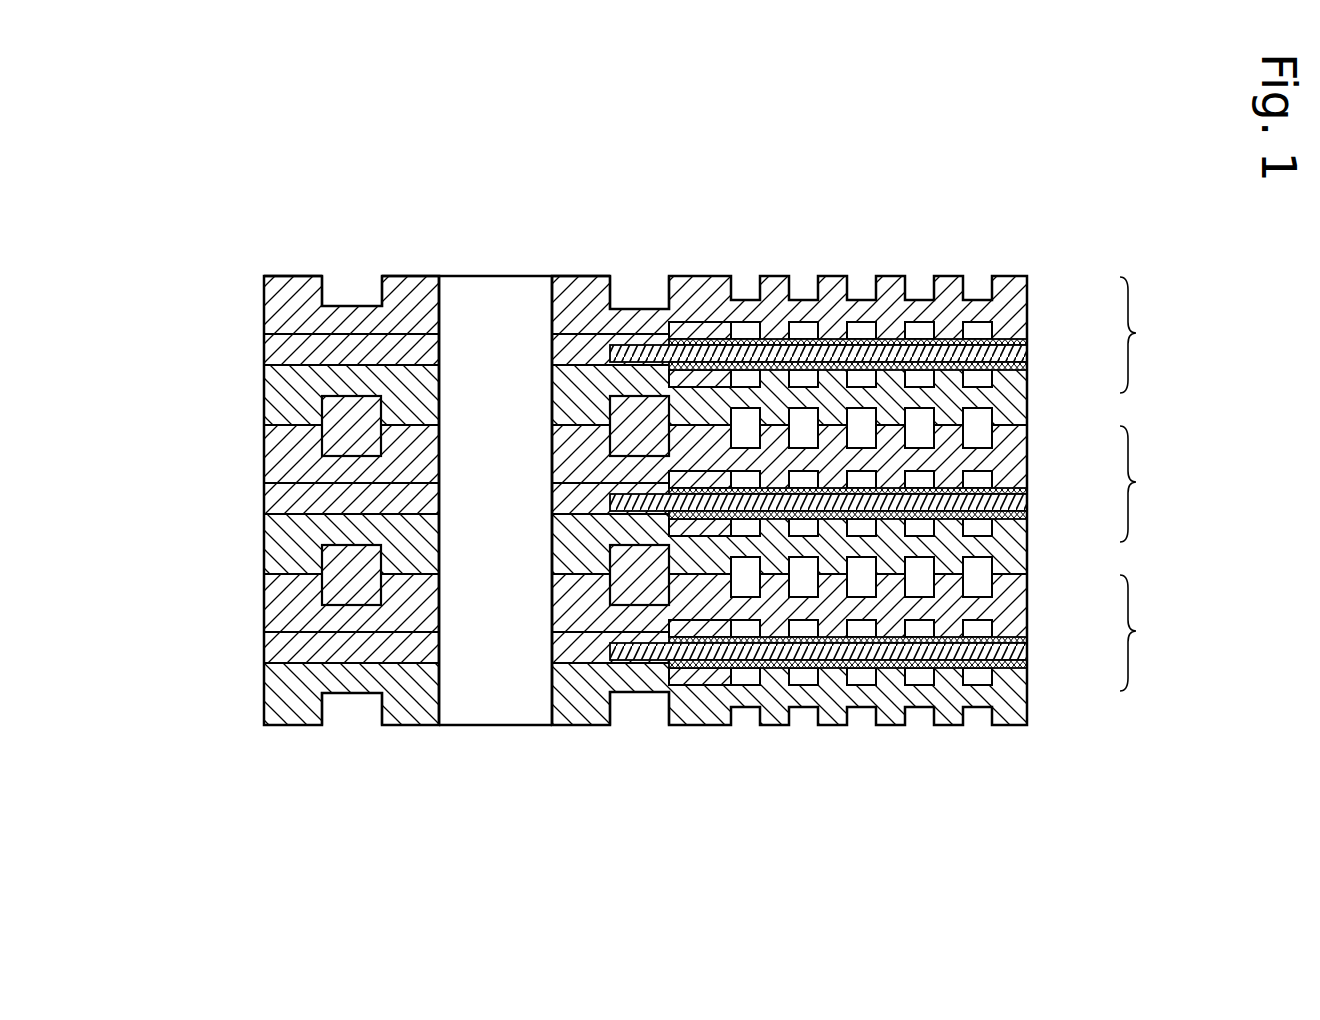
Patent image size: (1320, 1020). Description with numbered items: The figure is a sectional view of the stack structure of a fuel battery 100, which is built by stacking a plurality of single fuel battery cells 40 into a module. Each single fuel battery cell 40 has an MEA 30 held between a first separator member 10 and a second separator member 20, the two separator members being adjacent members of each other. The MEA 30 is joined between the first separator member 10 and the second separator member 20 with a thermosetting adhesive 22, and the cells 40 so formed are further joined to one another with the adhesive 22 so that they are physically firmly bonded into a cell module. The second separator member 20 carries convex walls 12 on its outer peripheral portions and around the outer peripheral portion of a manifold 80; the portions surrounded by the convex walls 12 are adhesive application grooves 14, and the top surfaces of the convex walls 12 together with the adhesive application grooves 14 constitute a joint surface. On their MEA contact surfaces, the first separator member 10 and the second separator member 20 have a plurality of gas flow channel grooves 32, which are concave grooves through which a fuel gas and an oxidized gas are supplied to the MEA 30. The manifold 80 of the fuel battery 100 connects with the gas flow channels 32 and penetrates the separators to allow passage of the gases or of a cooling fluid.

The first separator member 10 is at (278, 388).
The convex wall 12 is at (290, 276).
The adhesive application groove 14 is at (293, 448).
The second separator member 20 is at (280, 311).
The thermosetting adhesive 22 is at (437, 350).
The MEA 30 is at (1038, 370).
The gas flow channel groove 32 is at (858, 632).
The single fuel battery cell 40 is at (1146, 484).
The manifold 80 is at (500, 712).
The fuel battery 100 is at (911, 223).